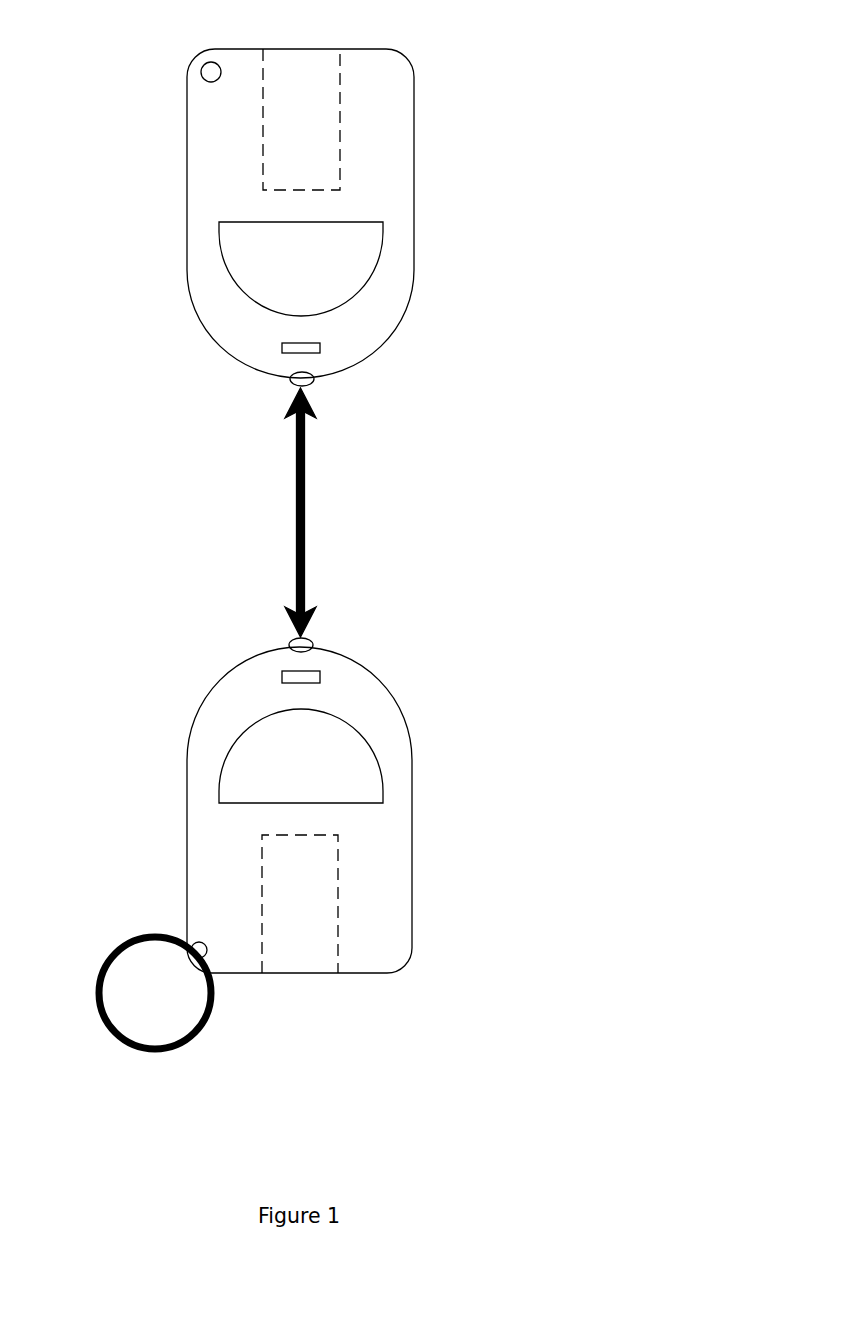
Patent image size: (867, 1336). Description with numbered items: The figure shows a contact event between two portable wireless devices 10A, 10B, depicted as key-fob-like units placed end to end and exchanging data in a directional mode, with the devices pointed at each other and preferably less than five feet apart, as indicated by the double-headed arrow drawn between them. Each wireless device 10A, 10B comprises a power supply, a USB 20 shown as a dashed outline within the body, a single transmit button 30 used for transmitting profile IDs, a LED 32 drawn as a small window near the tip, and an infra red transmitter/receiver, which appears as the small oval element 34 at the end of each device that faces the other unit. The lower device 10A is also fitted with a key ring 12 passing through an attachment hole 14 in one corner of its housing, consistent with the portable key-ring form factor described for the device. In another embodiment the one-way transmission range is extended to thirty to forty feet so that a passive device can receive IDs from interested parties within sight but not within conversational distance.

The wireless device 10A is at (412, 803).
The wireless device 10B is at (414, 192).
The key ring 12 is at (198, 1035).
The key ring attachment hole 14 is at (207, 955).
The USB 20 is at (340, 121).
The transmit button 30 is at (373, 266).
The LED 32 is at (320, 348).
The transceiver port 34 is at (314, 377).